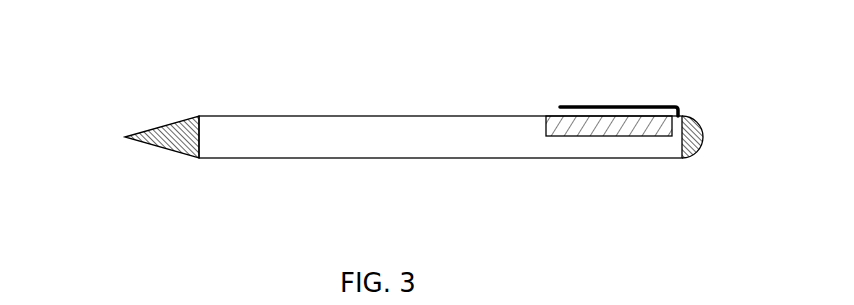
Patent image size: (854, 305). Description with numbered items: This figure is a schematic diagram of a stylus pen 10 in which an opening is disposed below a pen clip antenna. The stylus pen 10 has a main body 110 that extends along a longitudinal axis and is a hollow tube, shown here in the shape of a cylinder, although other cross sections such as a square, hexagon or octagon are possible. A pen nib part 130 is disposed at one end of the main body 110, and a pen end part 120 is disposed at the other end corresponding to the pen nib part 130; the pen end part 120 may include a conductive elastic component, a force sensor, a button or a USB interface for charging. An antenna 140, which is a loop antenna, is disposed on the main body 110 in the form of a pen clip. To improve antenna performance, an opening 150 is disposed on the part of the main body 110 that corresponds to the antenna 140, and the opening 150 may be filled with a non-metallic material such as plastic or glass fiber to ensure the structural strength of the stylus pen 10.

The stylus pen 10 is at (72, 103).
The main body 110 is at (385, 134).
The pen end part 120 is at (695, 121).
The pen nib part 130 is at (169, 124).
The antenna 140 is at (632, 101).
The opening 150 is at (621, 129).